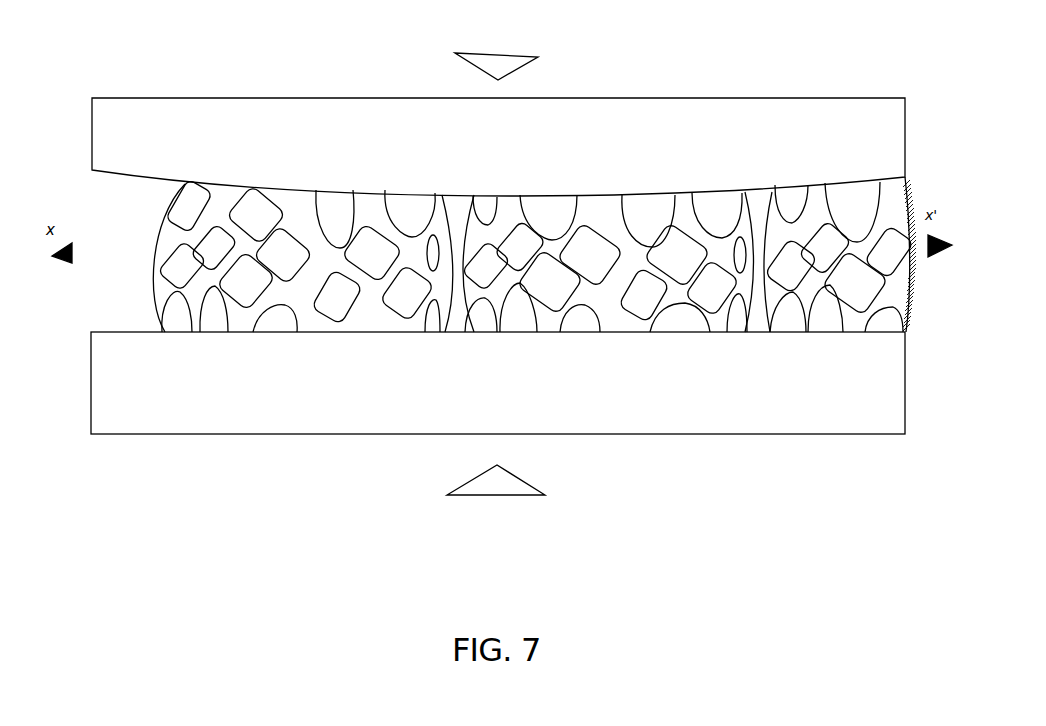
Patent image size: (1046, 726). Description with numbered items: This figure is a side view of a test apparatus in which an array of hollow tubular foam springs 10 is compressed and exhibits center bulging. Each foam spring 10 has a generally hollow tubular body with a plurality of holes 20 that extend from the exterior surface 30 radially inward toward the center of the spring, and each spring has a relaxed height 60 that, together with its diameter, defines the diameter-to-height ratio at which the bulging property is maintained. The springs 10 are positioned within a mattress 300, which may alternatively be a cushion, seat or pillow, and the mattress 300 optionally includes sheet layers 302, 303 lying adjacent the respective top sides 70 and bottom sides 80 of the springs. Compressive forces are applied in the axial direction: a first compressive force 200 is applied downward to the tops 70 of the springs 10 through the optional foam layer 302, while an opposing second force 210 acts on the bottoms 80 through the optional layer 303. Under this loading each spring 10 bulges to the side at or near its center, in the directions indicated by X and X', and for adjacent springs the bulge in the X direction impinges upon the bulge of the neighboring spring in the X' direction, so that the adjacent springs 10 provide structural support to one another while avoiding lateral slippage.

The foam spring 10 is at (237, 312).
The holes 20 is at (302, 233).
The exterior surface 30 is at (907, 187).
The height of the spring 60 is at (377, 320).
The top of the spring 70 is at (357, 183).
The bottom of the spring 80 is at (312, 337).
The compressive force 200 is at (533, 53).
The opposing second force 210 is at (463, 502).
The mattress 300 is at (196, 464).
The sheet layer 302 is at (792, 115).
The sheet layer 303 is at (750, 432).